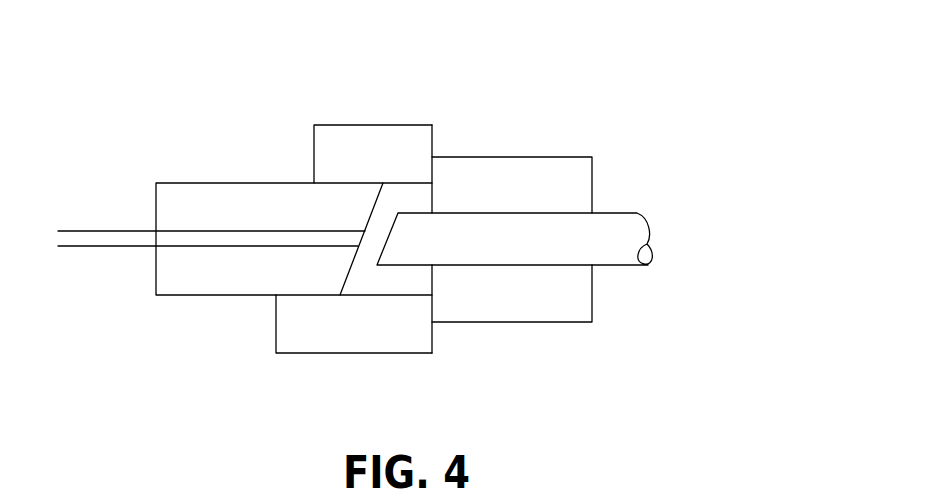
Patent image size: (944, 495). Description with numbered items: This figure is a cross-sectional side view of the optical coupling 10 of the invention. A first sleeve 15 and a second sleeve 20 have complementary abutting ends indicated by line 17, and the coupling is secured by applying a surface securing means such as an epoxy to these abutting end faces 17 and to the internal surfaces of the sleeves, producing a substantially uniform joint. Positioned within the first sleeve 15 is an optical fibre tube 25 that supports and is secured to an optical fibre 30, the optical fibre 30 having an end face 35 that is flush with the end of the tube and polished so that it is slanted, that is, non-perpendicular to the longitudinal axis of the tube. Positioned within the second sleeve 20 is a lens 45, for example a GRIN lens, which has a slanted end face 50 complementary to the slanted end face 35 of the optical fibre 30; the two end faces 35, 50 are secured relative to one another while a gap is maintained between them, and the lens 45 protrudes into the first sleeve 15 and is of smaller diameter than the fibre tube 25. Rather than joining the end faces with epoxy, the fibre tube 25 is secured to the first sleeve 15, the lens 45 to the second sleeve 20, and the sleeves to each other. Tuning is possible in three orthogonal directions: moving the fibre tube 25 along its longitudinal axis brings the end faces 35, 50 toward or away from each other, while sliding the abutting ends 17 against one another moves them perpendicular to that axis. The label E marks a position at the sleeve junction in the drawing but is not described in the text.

The optical coupling 10 is at (238, 96).
The optical fibre tube 25 is at (202, 208).
The slanted end face 50 is at (392, 236).
The first sleeve 15 is at (292, 332).
The complementary abutting ends 17 is at (432, 137).
The edge corner E is at (432, 168).
The second sleeve 20 is at (548, 307).
The lens 45 is at (628, 255).
The end face 35 is at (355, 265).
The optical fibre 30 is at (129, 238).